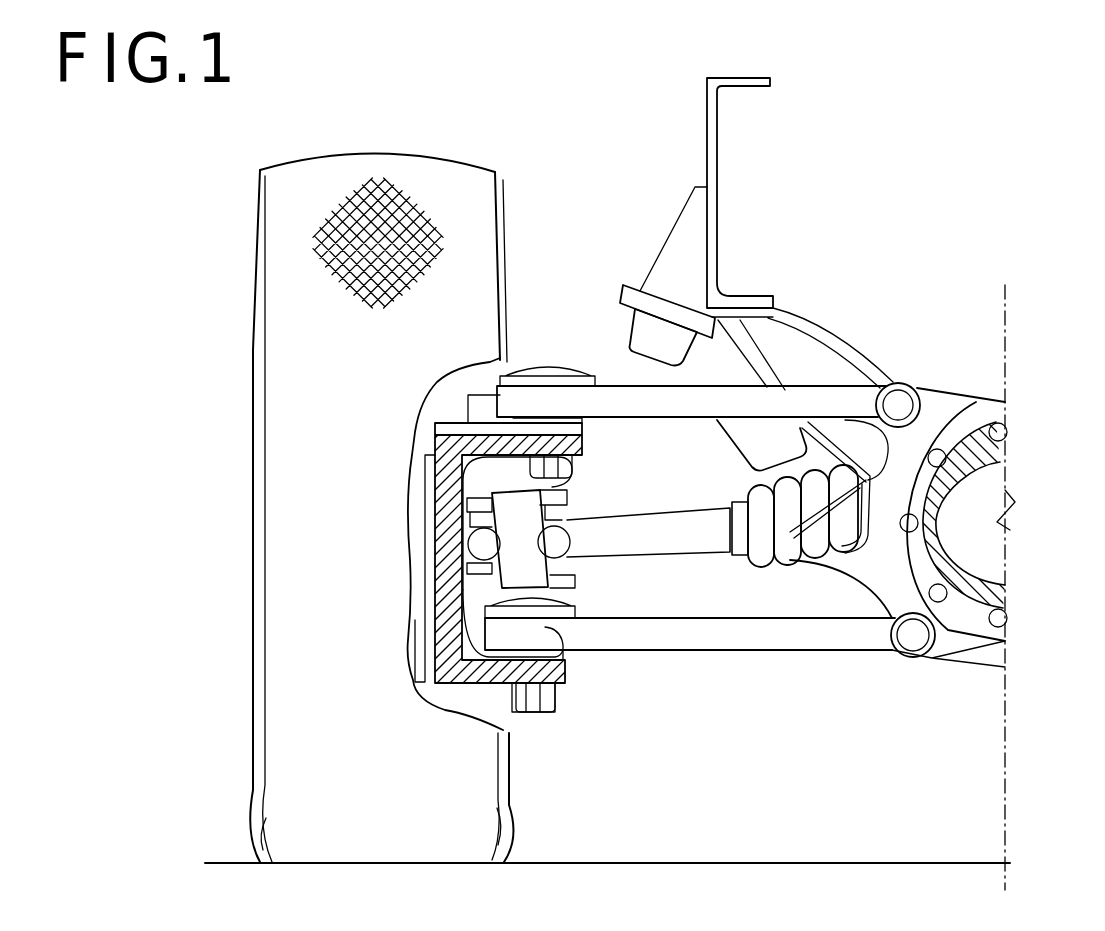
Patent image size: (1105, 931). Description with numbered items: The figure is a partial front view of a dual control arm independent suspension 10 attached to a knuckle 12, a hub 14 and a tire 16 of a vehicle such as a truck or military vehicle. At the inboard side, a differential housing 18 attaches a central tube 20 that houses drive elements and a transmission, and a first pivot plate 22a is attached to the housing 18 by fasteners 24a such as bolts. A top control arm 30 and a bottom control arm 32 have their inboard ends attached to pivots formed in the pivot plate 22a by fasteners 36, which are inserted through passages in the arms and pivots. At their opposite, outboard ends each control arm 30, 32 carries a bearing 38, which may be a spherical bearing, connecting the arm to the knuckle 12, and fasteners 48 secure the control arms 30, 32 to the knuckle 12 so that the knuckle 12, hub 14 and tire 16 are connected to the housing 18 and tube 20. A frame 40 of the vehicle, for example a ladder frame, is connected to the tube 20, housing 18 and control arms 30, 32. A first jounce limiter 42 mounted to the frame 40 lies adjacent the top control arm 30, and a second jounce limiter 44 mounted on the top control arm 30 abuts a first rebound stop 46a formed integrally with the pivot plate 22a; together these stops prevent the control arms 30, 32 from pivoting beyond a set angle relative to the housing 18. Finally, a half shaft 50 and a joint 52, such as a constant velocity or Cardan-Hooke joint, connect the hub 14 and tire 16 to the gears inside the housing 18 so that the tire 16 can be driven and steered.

The dual control arm independent suspension 10 is at (572, 332).
The knuckle 12 is at (567, 675).
The hub 14 is at (418, 633).
The tire 16 is at (290, 197).
The differential housing 18 is at (935, 412).
The central tube 20 is at (975, 472).
The first pivot plate 22a is at (953, 633).
The fastener 24a is at (937, 458).
The top control arm 30 is at (625, 398).
The bottom control arm 32 is at (760, 637).
The fastener 36 is at (900, 395).
The bearing 38 is at (545, 372).
The frame 40 is at (733, 77).
The first jounce limiter 42 is at (657, 337).
The second jounce limiter 44 is at (773, 437).
The first rebound stop 46a is at (785, 530).
The fastener 48 is at (562, 468).
The half shaft 50 is at (668, 533).
The joint 52 is at (512, 532).